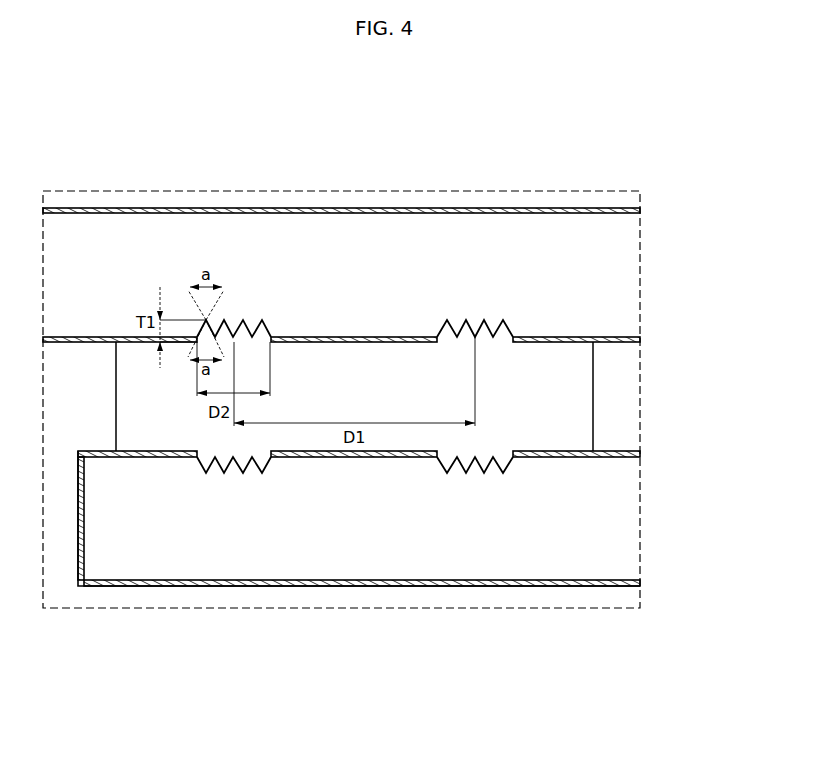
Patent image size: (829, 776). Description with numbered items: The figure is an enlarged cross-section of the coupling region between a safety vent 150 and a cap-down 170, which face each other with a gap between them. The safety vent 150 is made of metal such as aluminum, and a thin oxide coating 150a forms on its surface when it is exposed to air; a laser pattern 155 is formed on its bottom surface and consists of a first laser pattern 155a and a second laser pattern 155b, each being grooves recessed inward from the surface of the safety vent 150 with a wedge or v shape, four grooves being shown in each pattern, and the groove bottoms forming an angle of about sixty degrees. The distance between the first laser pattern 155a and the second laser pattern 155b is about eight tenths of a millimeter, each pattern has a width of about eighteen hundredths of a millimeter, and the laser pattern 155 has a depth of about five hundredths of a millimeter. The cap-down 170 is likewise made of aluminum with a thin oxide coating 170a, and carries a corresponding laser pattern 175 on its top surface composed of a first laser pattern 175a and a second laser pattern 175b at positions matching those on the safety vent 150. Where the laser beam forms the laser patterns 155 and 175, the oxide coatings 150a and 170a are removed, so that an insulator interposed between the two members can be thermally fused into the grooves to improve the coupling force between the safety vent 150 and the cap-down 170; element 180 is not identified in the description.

The safety vent 150 is at (630, 270).
The oxide coating 150a is at (640, 338).
The laser pattern 155 is at (355, 213).
The first laser pattern 155a is at (466, 320).
The second laser pattern 155b is at (243, 320).
The cap-down 170 is at (630, 522).
The oxide coating 170a is at (640, 452).
The laser pattern 175 is at (355, 583).
The first laser pattern 175a is at (466, 473).
The second laser pattern 175b is at (243, 473).
The spacer 180 is at (587, 401).